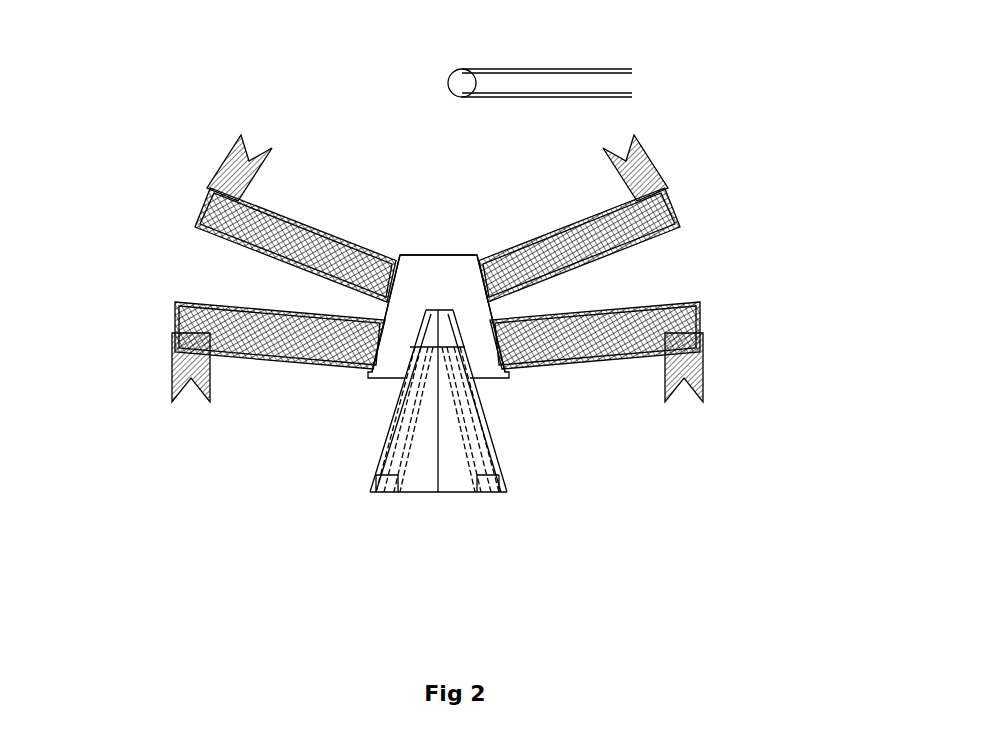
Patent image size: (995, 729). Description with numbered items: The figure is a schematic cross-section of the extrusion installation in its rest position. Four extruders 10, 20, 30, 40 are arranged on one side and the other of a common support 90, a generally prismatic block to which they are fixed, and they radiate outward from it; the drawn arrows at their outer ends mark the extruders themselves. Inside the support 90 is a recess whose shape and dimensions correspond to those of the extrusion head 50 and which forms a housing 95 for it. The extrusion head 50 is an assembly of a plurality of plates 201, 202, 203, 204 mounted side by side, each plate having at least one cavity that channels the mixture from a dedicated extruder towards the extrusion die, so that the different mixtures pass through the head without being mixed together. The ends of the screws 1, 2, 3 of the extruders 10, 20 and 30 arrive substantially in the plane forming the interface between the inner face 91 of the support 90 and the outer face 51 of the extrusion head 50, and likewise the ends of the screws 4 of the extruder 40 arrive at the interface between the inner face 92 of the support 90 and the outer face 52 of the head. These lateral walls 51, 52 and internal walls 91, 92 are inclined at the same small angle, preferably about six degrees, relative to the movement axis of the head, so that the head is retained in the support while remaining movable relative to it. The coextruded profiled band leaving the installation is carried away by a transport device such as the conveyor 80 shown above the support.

The screw 1 is at (227, 312).
The screw 2 is at (317, 230).
The screw 3 is at (684, 202).
The screws 4 is at (698, 325).
The extruder 10 is at (173, 333).
The extruder 20 is at (213, 193).
The extruder 30 is at (695, 208).
The extruder 40 is at (722, 335).
The extrusion head 50 is at (433, 507).
The outer face 51 is at (380, 465).
The outer face 52 is at (502, 458).
The conveyor 80 is at (626, 79).
The support 90 is at (427, 250).
The inner face 91 is at (413, 268).
The inner face 92 is at (475, 275).
The housing 95 is at (473, 282).
The plate 201 is at (392, 488).
The plate 202 is at (397, 433).
The plate 203 is at (485, 432).
The plate 204 is at (503, 492).